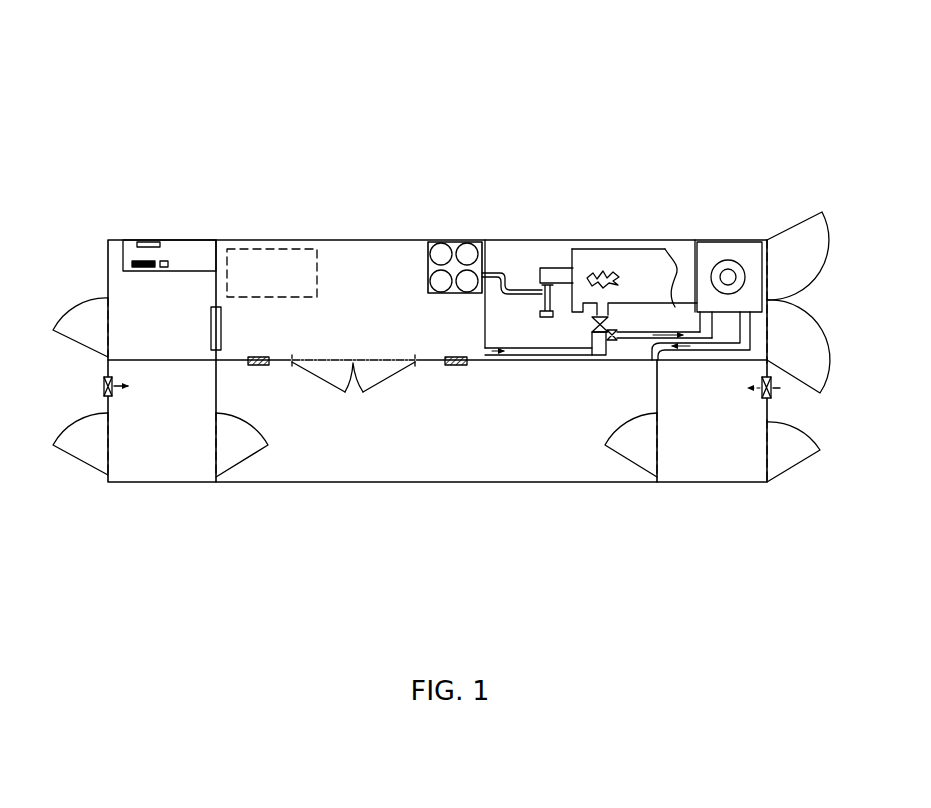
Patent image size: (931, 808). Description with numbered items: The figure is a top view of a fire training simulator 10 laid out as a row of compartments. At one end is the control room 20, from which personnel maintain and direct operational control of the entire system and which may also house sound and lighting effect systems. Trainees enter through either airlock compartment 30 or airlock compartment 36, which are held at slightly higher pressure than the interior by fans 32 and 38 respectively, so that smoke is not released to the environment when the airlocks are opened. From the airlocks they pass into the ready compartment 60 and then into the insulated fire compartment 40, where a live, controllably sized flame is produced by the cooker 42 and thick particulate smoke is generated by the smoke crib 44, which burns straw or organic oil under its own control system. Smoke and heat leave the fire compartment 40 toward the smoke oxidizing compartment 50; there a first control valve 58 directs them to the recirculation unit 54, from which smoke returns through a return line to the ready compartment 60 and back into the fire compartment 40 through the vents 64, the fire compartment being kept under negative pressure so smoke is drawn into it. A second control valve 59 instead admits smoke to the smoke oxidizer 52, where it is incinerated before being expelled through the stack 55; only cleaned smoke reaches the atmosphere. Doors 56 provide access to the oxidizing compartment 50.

The fire training simulator 10 is at (125, 105).
The control room 20 is at (153, 278).
The airlock compartment 30 is at (175, 468).
The fan 32 is at (101, 386).
The airlock compartment 36 is at (710, 458).
The fan 38 is at (778, 392).
The fire compartment 40 is at (375, 270).
The cooker 42 is at (455, 258).
The smoke crib 44 is at (265, 264).
The smoke oxidizing compartment 50 is at (641, 238).
The smoke oxidizer 52 is at (588, 272).
The recirculation unit 54 is at (709, 250).
The stack 55 is at (737, 266).
The doors 56 is at (781, 246).
The first control valve 58 is at (614, 342).
The second control valve 59 is at (588, 330).
The ready compartment 60 is at (428, 453).
The vents 64 is at (447, 368).